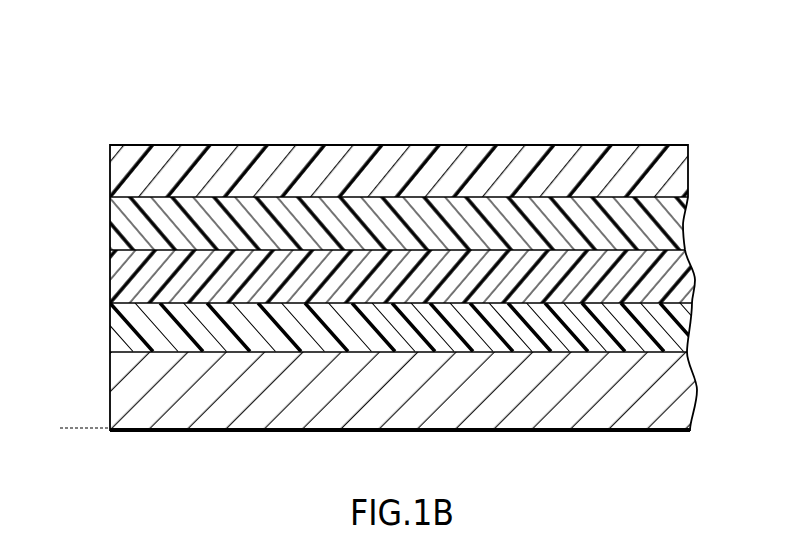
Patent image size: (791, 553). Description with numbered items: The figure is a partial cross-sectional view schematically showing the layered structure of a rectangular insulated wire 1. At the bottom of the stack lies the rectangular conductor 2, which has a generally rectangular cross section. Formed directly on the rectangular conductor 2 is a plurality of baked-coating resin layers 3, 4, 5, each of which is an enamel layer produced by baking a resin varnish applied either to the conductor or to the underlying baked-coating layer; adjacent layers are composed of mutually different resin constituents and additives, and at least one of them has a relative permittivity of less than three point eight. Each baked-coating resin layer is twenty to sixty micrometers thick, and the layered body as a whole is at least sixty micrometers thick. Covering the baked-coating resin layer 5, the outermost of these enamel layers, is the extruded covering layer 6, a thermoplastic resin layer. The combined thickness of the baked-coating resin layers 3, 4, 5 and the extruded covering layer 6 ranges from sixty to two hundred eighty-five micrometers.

The rectangular insulated wire 1 is at (461, 127).
The rectangular conductor 2 is at (140, 382).
The baked-coating resin layer 3 is at (130, 326).
The baked-coating resin layer 4 is at (130, 287).
The baked-coating resin layer 5 is at (130, 228).
The extruded covering layer 6 is at (136, 166).